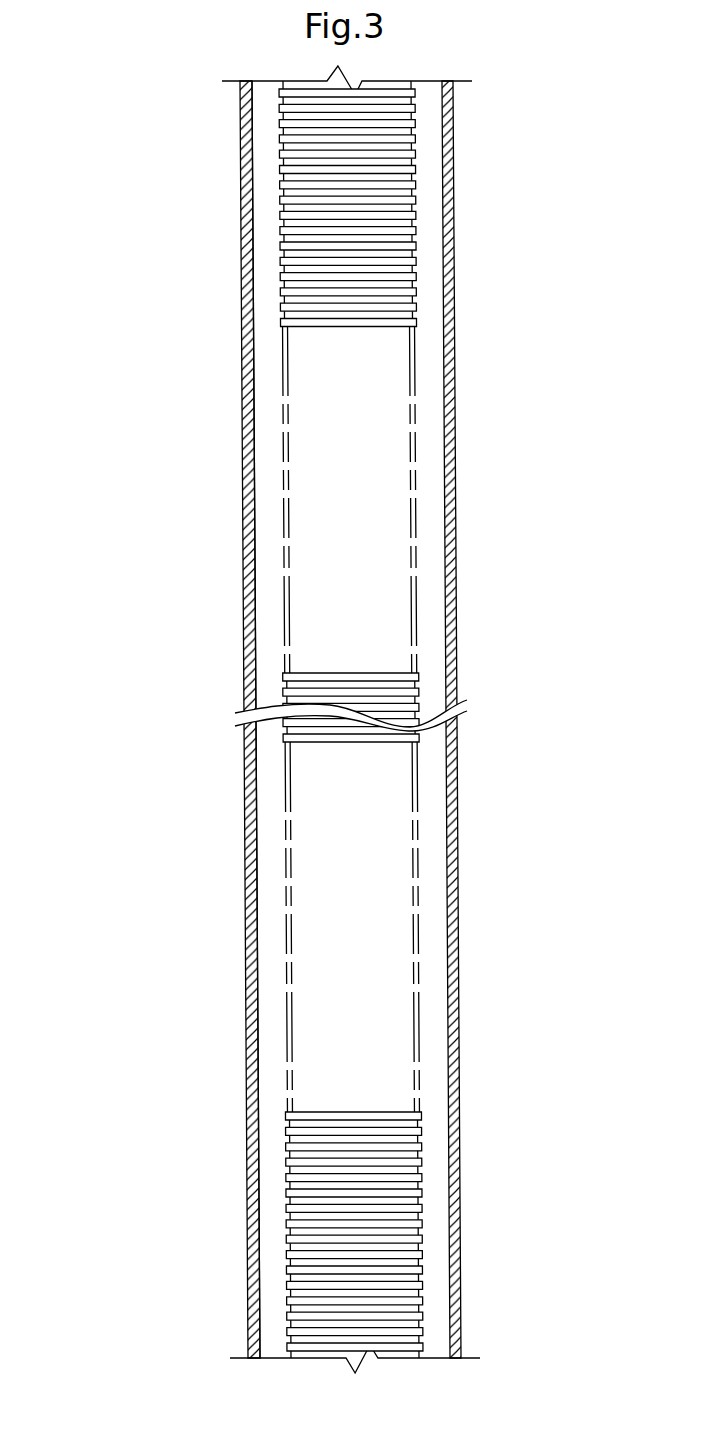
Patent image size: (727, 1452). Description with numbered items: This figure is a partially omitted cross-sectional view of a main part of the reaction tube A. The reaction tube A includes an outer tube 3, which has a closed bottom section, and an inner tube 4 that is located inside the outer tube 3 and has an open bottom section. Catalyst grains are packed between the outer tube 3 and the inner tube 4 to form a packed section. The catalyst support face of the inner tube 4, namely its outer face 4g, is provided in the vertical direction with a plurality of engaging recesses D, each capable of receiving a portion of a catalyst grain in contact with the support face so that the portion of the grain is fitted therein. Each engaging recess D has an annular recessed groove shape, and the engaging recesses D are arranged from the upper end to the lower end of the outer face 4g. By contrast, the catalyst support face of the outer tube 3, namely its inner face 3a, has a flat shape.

The reaction tube A is at (140, 292).
The outer tube 3 is at (243, 555).
The inner face of the outer tube 3a is at (256, 822).
The inner tube 4 is at (420, 287).
The outer face of the inner tube 4g is at (420, 791).
The engaging recess D is at (413, 130).